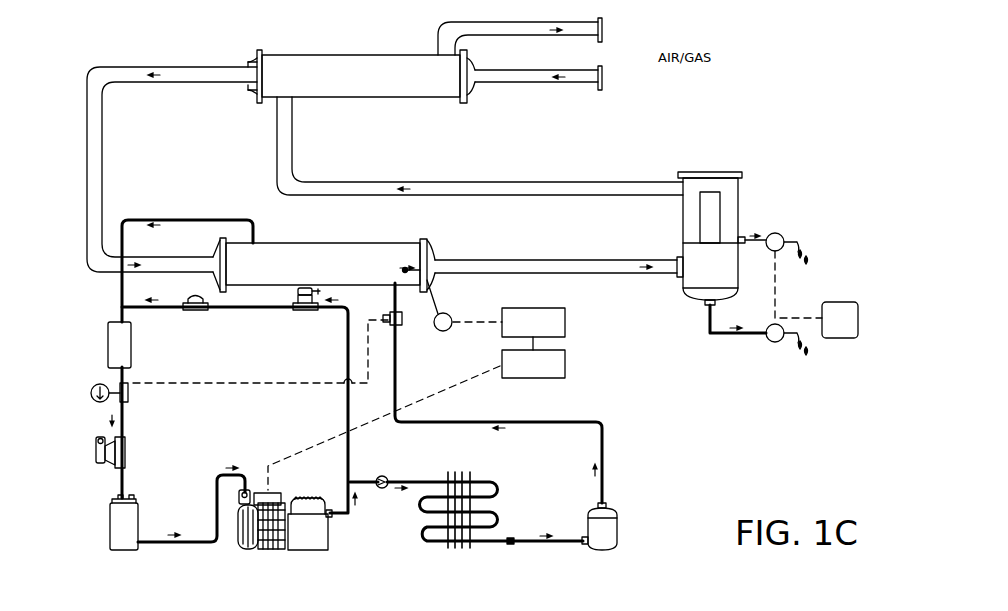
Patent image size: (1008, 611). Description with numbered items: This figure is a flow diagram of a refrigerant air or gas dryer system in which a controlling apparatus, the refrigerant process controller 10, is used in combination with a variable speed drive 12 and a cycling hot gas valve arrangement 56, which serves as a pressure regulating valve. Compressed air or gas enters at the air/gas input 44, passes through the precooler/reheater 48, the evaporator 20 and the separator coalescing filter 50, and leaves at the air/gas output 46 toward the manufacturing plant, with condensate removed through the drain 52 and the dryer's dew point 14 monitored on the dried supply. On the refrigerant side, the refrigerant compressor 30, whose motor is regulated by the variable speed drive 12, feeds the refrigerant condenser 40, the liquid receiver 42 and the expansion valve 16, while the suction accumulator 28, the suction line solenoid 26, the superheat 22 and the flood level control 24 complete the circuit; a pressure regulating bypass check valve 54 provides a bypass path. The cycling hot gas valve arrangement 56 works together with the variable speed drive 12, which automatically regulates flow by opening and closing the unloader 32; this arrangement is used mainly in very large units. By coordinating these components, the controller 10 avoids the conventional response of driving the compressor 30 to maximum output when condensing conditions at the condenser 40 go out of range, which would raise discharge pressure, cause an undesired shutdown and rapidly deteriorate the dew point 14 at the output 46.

The refrigerant process controller 10 is at (565, 318).
The variable speed drive 12 is at (565, 364).
The dew point 14 is at (405, 270).
The expansion valve 16 is at (403, 320).
The evaporator 20 is at (290, 243).
The superheat 22 is at (91, 391).
The flood level control 24 is at (108, 338).
The suction line solenoid 26 is at (96, 452).
The suction accumulator 28 is at (140, 522).
The refrigerant compressor 30 is at (328, 536).
The unloader 32 is at (305, 312).
The refrigerant condenser 40 is at (470, 472).
The liquid receiver 42 is at (617, 525).
The air/gas input 44 is at (528, 83).
The air/gas output 46 is at (505, 36).
The precooler/reheater 48 is at (325, 55).
The separator coalescing filter 50 is at (740, 212).
The drain 52 is at (775, 343).
The pressure regulating bypass check valve 54 is at (386, 477).
The cycling hot gas valve arrangement 56 is at (195, 312).